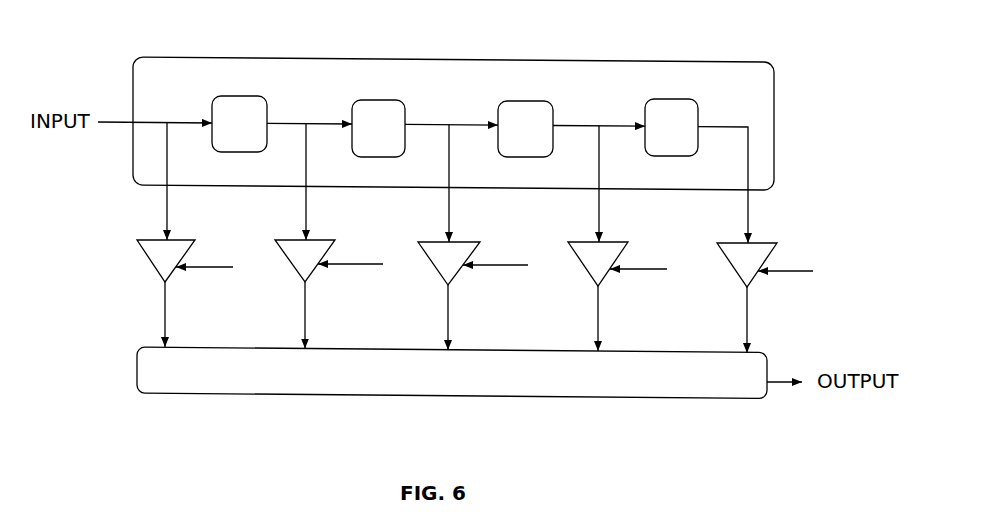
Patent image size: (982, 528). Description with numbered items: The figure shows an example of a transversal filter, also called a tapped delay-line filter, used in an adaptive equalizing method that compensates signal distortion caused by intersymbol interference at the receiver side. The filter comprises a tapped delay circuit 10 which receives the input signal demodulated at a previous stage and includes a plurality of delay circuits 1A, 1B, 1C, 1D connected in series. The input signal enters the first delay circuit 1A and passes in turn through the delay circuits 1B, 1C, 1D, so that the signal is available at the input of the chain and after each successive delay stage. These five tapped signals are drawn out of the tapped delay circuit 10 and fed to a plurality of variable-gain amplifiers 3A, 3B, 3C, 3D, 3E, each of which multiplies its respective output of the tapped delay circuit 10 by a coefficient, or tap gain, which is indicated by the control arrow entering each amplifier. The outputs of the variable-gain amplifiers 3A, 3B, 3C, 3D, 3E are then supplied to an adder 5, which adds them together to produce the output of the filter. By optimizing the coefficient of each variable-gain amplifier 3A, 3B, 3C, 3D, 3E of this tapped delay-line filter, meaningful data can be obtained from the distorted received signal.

The tapped delay circuit 10 is at (703, 63).
The delay circuit 1A is at (265, 95).
The delay circuit 1B is at (402, 102).
The delay circuit 1C is at (548, 102).
The delay circuit 1D is at (695, 100).
The variable-gain amplifier 3A is at (150, 258).
The variable-gain amplifier 3B is at (293, 262).
The variable-gain amplifier 3C is at (431, 263).
The variable-gain amplifier 3D is at (582, 263).
The variable-gain amplifier 3E is at (730, 272).
The adder 5 is at (402, 399).